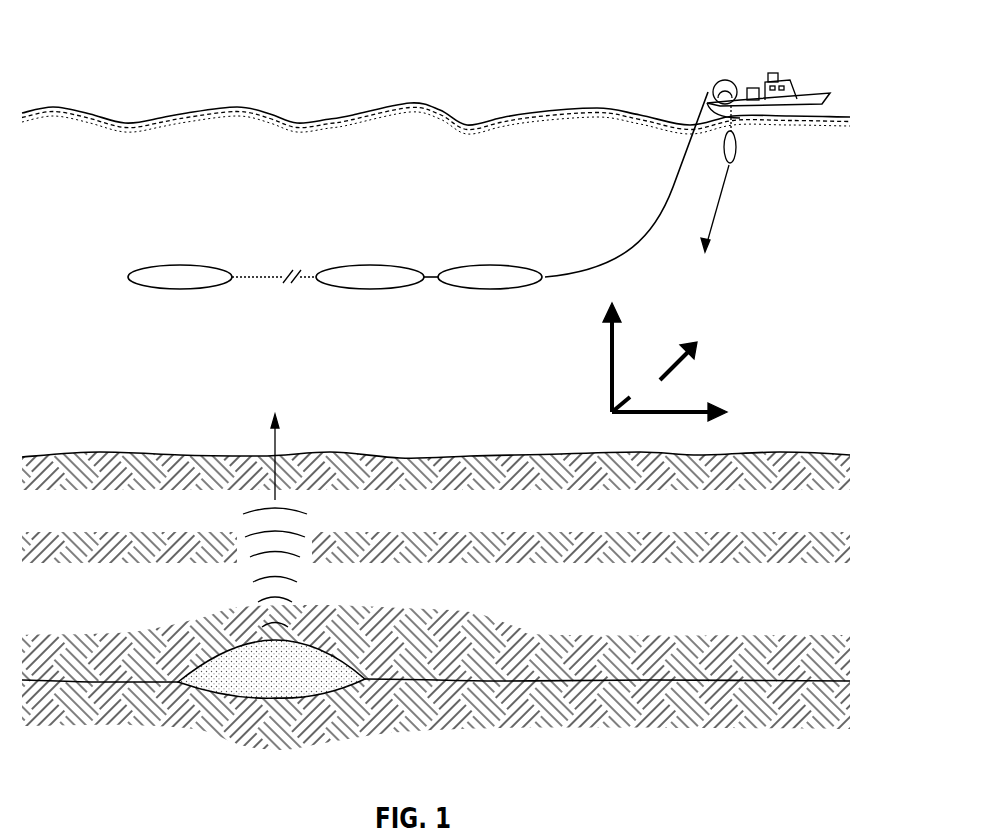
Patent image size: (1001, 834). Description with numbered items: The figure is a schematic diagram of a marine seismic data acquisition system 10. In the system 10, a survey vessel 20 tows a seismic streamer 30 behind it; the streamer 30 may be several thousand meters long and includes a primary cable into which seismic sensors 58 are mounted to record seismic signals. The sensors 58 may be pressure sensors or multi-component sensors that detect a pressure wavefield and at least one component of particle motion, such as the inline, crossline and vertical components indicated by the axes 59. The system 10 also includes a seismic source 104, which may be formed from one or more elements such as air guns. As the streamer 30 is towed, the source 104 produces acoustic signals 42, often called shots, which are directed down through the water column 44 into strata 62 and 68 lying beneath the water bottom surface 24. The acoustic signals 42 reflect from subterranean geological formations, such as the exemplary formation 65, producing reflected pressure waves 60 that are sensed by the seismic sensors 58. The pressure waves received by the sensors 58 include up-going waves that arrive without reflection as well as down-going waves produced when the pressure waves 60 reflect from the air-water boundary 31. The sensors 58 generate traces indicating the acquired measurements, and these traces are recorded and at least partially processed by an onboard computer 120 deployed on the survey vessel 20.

The marine seismic data acquisition system 10 is at (220, 70).
The survey vessel 20 is at (823, 92).
The water bottom surface 24 is at (733, 452).
The seismic streamer 30 is at (673, 190).
The air-water boundary 31 is at (383, 105).
The acoustic signal 42 is at (722, 195).
The water column 44 is at (768, 304).
The seismic sensor 58 is at (192, 265).
The axes 59 is at (596, 419).
The pressure waves 60 is at (238, 587).
The stratum 62 is at (439, 652).
The formation 65 is at (288, 680).
The stratum 68 is at (439, 722).
The seismic source 104 is at (738, 150).
The onboard computer 120 is at (752, 88).